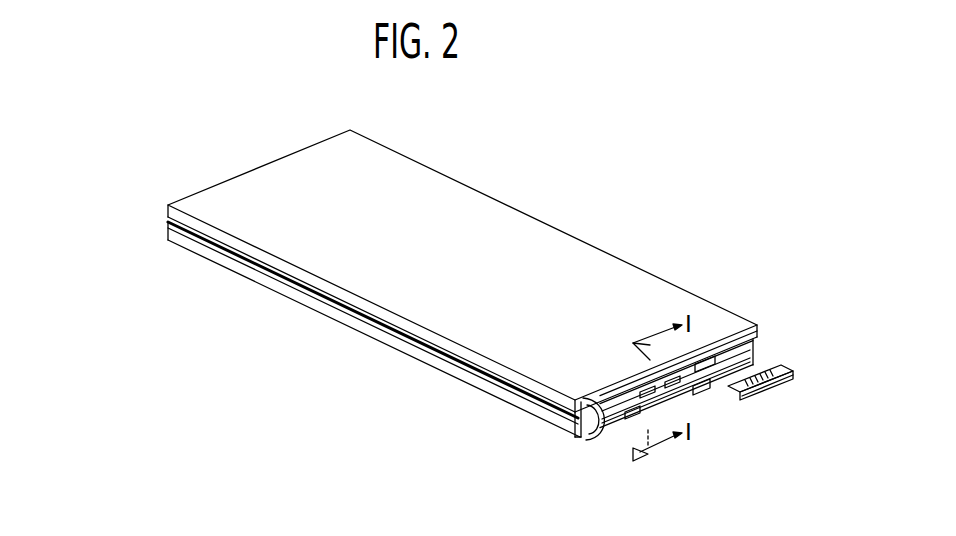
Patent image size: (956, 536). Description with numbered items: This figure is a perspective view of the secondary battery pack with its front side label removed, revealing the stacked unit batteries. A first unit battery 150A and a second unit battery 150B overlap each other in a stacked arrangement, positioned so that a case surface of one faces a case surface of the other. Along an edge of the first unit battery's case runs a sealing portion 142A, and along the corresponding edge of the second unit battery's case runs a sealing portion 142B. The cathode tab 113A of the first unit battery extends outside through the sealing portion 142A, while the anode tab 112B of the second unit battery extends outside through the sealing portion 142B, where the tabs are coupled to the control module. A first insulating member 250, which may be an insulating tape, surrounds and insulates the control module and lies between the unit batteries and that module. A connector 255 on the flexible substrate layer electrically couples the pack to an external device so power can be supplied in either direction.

The first unit battery 150A is at (160, 206).
The second unit battery 150B is at (160, 237).
The first insulating member 250 is at (600, 433).
The sealing portion 142A is at (600, 390).
The sealing portion 142B is at (540, 415).
The cathode tab 113A is at (705, 362).
The anode tab 112B is at (702, 390).
The connector 255 is at (790, 365).